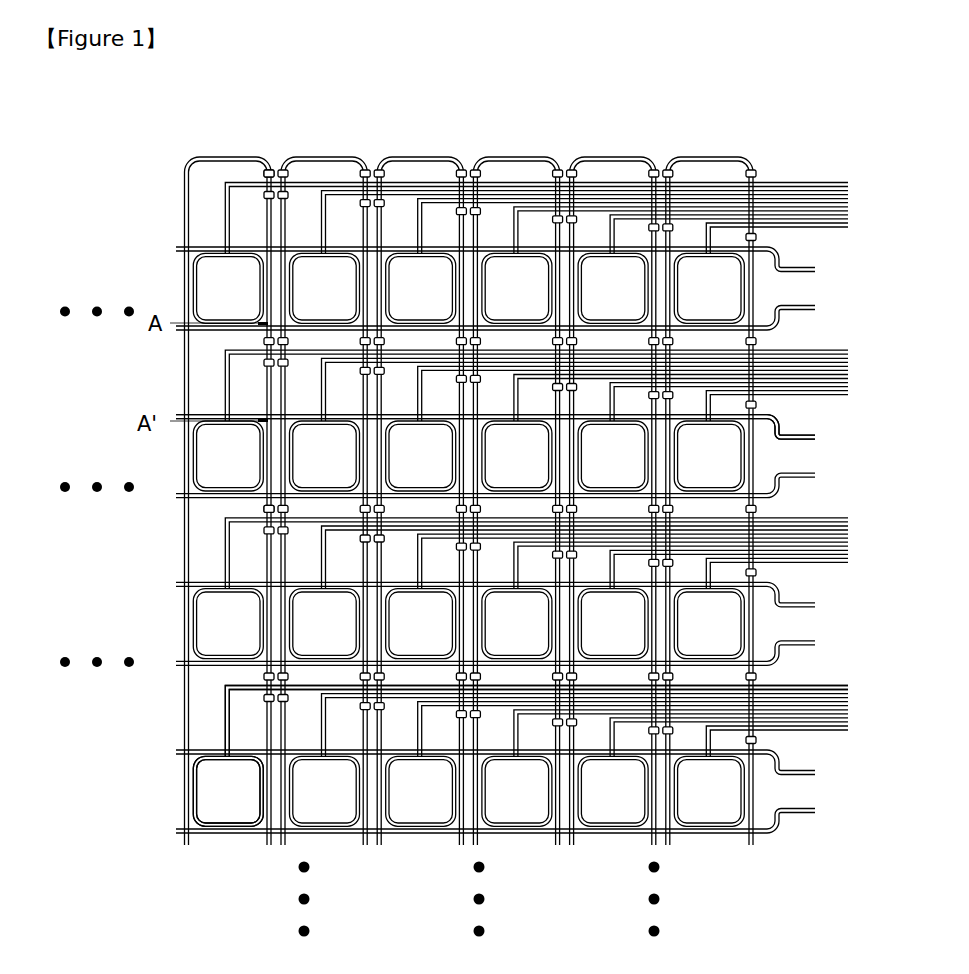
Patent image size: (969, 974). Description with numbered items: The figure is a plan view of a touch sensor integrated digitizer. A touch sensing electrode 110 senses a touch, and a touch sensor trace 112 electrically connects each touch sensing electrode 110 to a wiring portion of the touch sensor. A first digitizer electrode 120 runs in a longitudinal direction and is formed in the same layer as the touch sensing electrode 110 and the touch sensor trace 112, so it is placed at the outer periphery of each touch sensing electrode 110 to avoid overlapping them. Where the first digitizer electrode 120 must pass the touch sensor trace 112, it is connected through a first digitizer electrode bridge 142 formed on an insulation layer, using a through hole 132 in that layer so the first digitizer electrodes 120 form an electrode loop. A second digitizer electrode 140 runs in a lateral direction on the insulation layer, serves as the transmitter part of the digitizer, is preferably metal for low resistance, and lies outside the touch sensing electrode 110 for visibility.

The touch sensing electrode 110 is at (208, 795).
The touch sensor trace 112 is at (229, 723).
The first digitizer electrode 120 is at (186, 552).
The through hole 132 is at (267, 508).
The second digitizer electrode 140 is at (207, 415).
The first digitizer electrode bridge 142 is at (266, 175).